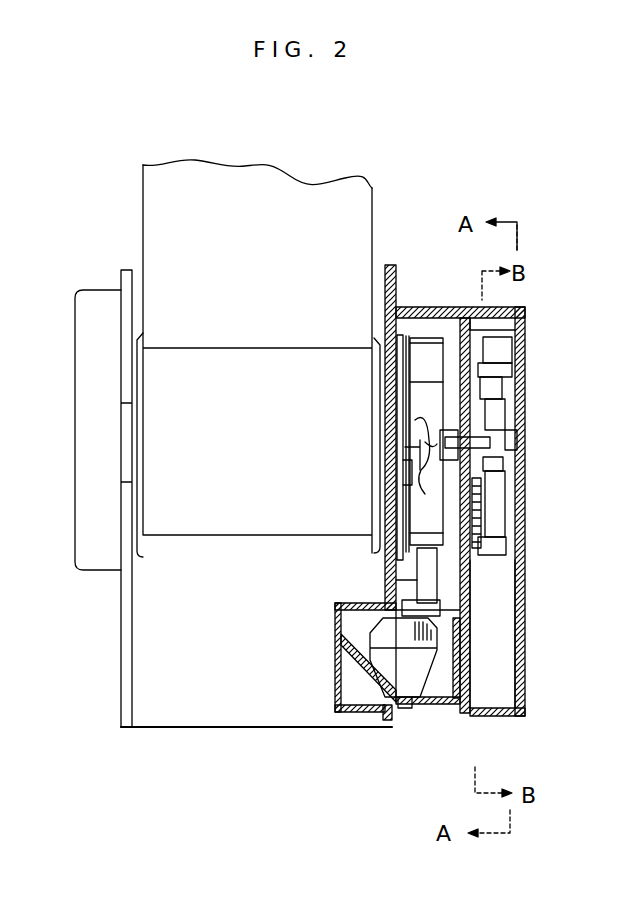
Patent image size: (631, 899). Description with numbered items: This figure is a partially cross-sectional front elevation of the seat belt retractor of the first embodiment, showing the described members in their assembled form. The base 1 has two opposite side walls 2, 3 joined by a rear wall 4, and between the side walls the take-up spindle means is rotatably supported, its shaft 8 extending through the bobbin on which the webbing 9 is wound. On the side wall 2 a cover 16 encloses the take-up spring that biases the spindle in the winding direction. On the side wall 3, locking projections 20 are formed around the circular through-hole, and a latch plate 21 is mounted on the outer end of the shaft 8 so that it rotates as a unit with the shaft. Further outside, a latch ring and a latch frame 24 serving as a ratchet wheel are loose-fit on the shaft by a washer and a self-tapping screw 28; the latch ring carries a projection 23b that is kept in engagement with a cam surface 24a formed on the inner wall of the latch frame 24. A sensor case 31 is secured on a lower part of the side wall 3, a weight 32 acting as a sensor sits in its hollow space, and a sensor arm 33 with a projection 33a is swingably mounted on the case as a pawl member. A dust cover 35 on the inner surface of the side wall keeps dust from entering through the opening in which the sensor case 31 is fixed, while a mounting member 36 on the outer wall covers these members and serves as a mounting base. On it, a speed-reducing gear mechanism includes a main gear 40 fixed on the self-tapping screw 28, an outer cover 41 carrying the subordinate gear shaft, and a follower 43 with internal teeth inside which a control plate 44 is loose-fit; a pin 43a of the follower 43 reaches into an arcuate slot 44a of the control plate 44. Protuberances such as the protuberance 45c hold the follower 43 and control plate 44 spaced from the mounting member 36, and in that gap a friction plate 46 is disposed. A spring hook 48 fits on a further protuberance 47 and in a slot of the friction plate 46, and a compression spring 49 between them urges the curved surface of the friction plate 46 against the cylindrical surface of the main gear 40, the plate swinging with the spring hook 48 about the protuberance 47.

The base 1 is at (193, 742).
The side wall 2 is at (121, 716).
The side wall 3 is at (391, 262).
The rear wall 4 is at (314, 724).
The shaft 8 is at (410, 468).
The webbing 9 is at (318, 188).
The cover 16 is at (82, 377).
The locking projection 20 is at (399, 358).
The latch plate 21 is at (403, 389).
The projection 23b is at (405, 447).
The latch frame 24 is at (425, 346).
The cam surface 24a is at (420, 478).
The self-tapping screw 28 is at (448, 437).
The sensor case 31 is at (438, 702).
The weight 32 is at (403, 722).
The sensor arm 33 is at (432, 584).
The projection 33a is at (440, 612).
The dust cover 35 is at (335, 695).
The mounting member 36 is at (455, 306).
The main gear 40 is at (516, 437).
The outer cover 41 is at (522, 584).
The follower 43 is at (508, 332).
The pin 43a is at (500, 363).
The control plate 44 is at (522, 310).
The arcuate slot 44a is at (504, 406).
The protuberance 45c is at (500, 385).
The friction plate 46 is at (500, 546).
The protuberance 47 is at (482, 506).
The spring hook 48 is at (497, 496).
The compression spring 49 is at (496, 466).